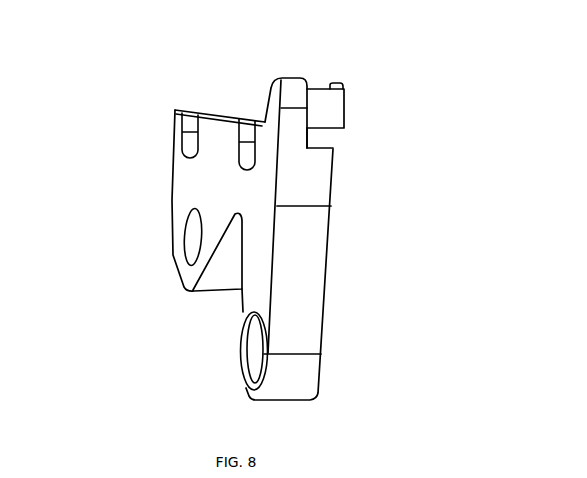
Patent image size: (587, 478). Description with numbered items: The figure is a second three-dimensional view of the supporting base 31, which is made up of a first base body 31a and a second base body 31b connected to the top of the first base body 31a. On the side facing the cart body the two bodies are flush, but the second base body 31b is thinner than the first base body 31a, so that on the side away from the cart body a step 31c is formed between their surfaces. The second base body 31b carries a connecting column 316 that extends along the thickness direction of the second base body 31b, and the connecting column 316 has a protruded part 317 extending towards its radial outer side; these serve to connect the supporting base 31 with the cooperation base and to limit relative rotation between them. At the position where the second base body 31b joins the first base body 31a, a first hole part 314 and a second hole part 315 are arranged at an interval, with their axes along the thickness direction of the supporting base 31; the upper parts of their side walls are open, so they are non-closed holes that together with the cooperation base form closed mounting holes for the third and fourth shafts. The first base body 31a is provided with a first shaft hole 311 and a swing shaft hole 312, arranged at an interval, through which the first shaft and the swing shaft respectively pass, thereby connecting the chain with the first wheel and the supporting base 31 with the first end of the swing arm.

The supporting base 31 is at (148, 185).
The first base body 31a is at (305, 277).
The second base body 31b is at (293, 92).
The step 31c is at (318, 152).
The first shaft hole 311 is at (262, 353).
The swing shaft hole 312 is at (192, 242).
The first hole part 314 is at (242, 130).
The second hole part 315 is at (188, 140).
The connecting column 316 is at (335, 122).
The protruded part 317 is at (336, 85).